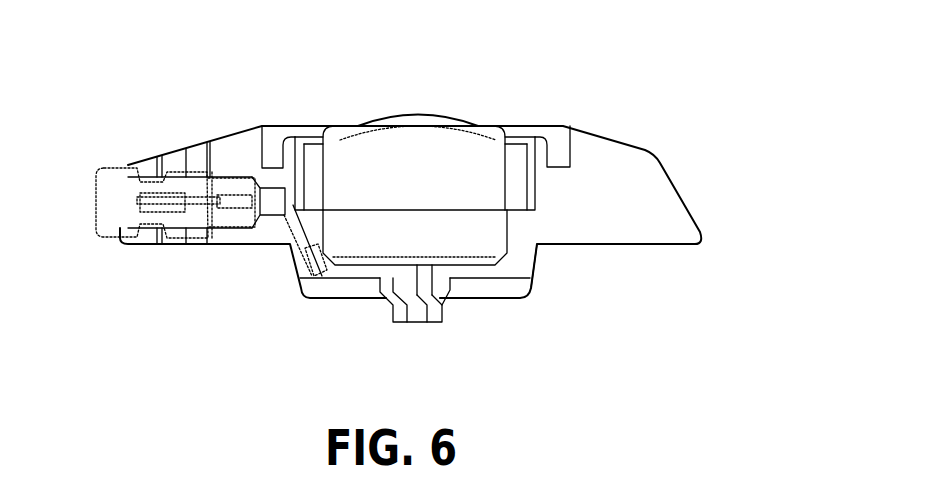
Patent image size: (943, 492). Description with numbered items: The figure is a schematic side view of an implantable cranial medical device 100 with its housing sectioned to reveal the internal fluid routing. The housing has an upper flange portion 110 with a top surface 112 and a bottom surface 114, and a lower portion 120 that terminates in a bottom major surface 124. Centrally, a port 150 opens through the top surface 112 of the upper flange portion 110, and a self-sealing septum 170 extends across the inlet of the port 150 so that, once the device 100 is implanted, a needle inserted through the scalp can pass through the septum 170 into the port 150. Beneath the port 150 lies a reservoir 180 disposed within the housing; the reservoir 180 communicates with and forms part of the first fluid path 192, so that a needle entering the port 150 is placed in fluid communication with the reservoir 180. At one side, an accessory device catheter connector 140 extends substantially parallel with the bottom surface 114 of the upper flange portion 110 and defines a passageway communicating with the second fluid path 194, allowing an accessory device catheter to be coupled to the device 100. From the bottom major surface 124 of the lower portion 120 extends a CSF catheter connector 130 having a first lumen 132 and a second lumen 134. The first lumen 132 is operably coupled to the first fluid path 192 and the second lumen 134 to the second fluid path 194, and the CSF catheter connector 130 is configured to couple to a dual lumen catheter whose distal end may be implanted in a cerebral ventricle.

The implantable medical device 100 is at (244, 80).
The upper flange portion 110 is at (637, 146).
The top surface 112 is at (608, 125).
The bottom surface 114 is at (629, 245).
The lower portion 120 is at (537, 260).
The bottom major surface 124 is at (498, 300).
The CSF catheter connector 130 is at (393, 300).
The first lumen 132 is at (432, 320).
The second lumen 134 is at (400, 317).
The accessory device catheter connector 140 is at (110, 208).
The port 150 is at (427, 118).
The self-sealing septum 170 is at (388, 137).
The reservoir 180 is at (345, 240).
The first fluid path 192 is at (427, 283).
The second fluid path 194 is at (295, 225).